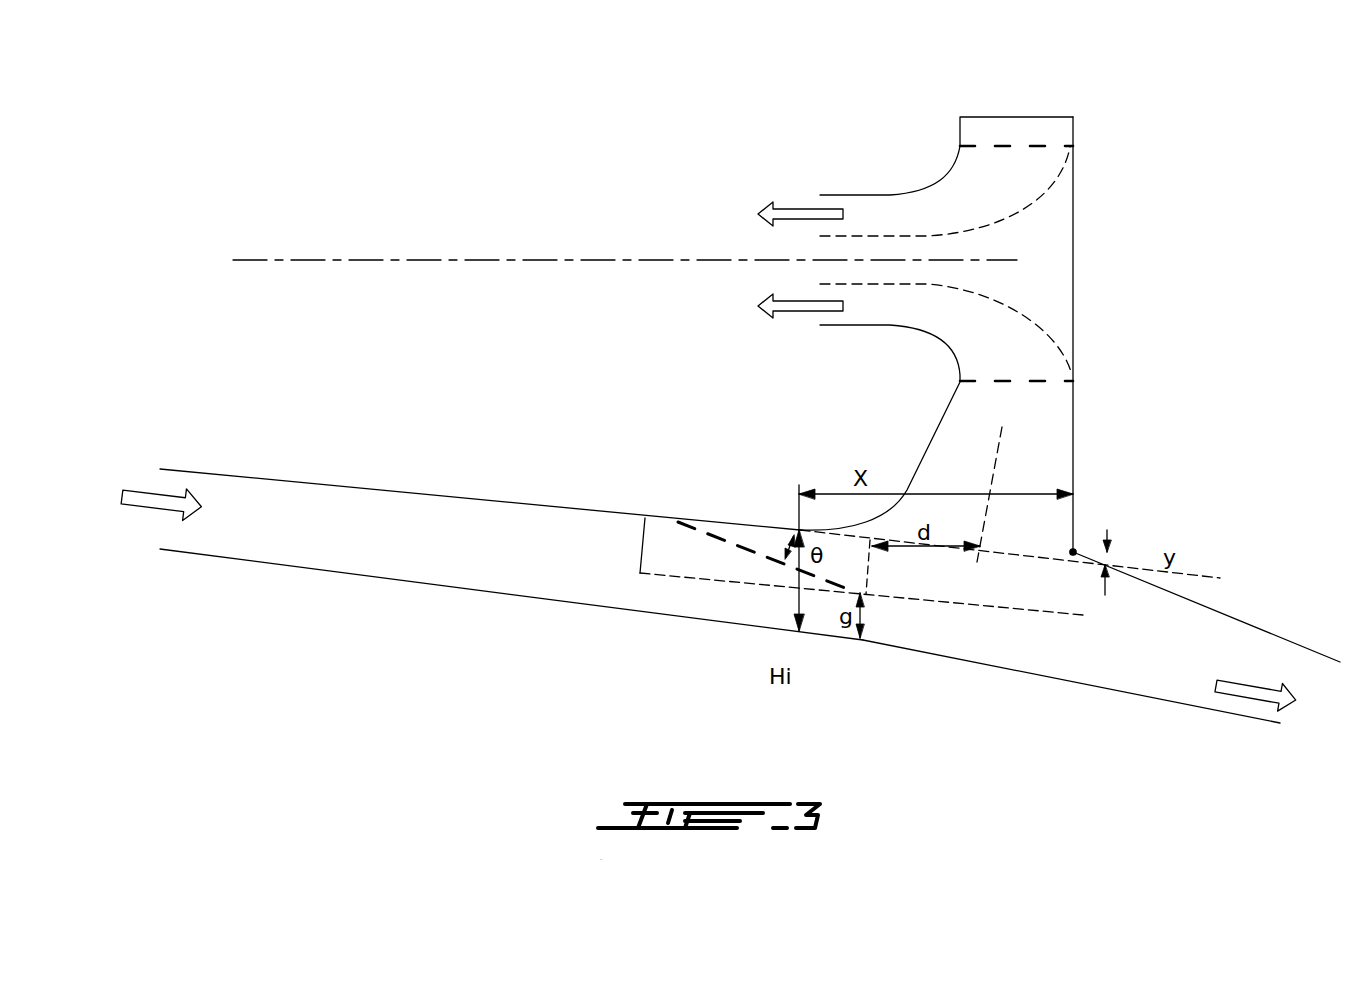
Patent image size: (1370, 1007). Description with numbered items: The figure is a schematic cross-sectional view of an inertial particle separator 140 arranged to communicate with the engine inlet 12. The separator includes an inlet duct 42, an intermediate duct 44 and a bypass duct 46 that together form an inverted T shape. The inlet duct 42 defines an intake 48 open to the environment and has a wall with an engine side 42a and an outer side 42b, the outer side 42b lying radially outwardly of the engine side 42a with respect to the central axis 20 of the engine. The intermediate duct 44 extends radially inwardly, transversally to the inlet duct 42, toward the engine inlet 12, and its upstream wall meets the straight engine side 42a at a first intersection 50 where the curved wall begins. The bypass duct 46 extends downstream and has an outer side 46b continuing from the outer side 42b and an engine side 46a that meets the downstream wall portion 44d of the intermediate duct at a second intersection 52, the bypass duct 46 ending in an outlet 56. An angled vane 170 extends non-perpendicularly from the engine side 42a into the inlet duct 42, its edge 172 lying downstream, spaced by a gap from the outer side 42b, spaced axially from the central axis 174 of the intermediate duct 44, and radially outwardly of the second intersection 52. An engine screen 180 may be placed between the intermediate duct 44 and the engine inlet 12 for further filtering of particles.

The inertial particle separator 140 is at (313, 200).
The central axis 20 is at (438, 260).
The engine inlet 12 is at (880, 210).
The engine screen 180 is at (1035, 146).
The inlet duct 42 is at (377, 490).
The engine side 42a is at (548, 506).
The outer side 42b is at (560, 601).
The intake 48 is at (165, 483).
The first intersection 50 is at (799, 530).
The angled vane 170 is at (748, 547).
The edge 172 is at (867, 593).
The central axis 174 is at (997, 460).
The bypass duct 46 is at (1073, 412).
The downstream wall portion 44d is at (1073, 505).
The second intersection 52 is at (1075, 550).
The intermediate duct 44 is at (1217, 633).
The engine side 46a is at (1287, 637).
The outer side 46b is at (1163, 701).
The outlet 56 is at (1263, 705).